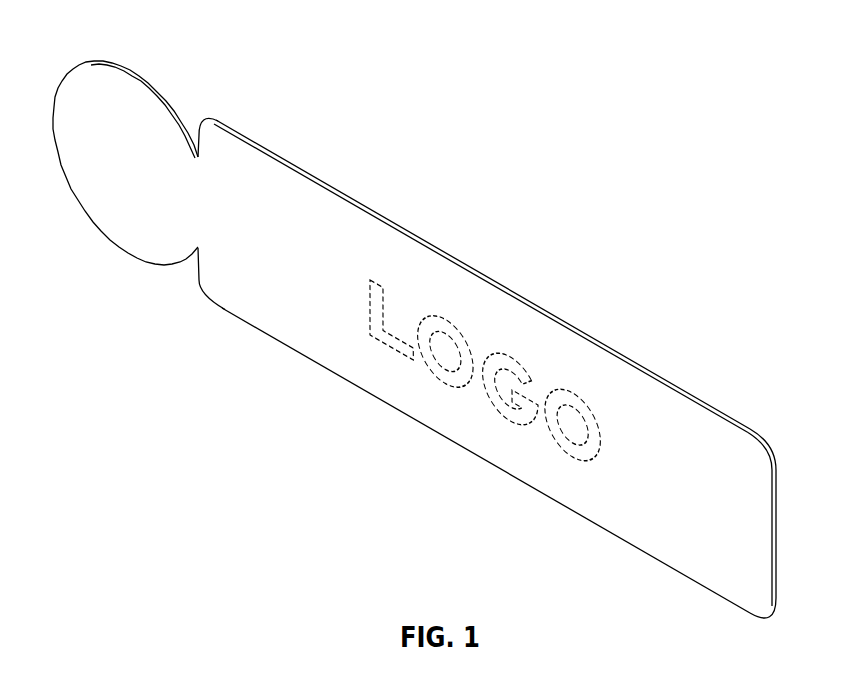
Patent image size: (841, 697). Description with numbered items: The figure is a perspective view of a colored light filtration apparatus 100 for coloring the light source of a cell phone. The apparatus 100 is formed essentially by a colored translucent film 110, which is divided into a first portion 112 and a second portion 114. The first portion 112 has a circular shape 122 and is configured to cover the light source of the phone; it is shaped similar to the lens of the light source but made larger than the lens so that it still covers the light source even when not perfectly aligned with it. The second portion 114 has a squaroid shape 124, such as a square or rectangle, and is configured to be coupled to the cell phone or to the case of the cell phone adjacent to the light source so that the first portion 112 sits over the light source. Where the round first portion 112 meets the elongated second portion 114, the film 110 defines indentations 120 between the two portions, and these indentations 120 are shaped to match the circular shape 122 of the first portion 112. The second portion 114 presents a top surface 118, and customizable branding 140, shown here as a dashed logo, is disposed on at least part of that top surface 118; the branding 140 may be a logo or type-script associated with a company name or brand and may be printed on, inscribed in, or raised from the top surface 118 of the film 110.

The apparatus 100 is at (619, 172).
The colored translucent film 110 is at (457, 353).
The first portion 112 is at (156, 83).
The second portion 114 is at (448, 439).
The top surface 118 is at (755, 540).
The indentations 120 is at (200, 113).
The circular shape 122 is at (107, 240).
The squaroid shape 124 is at (480, 272).
The customizable branding 140 is at (362, 323).